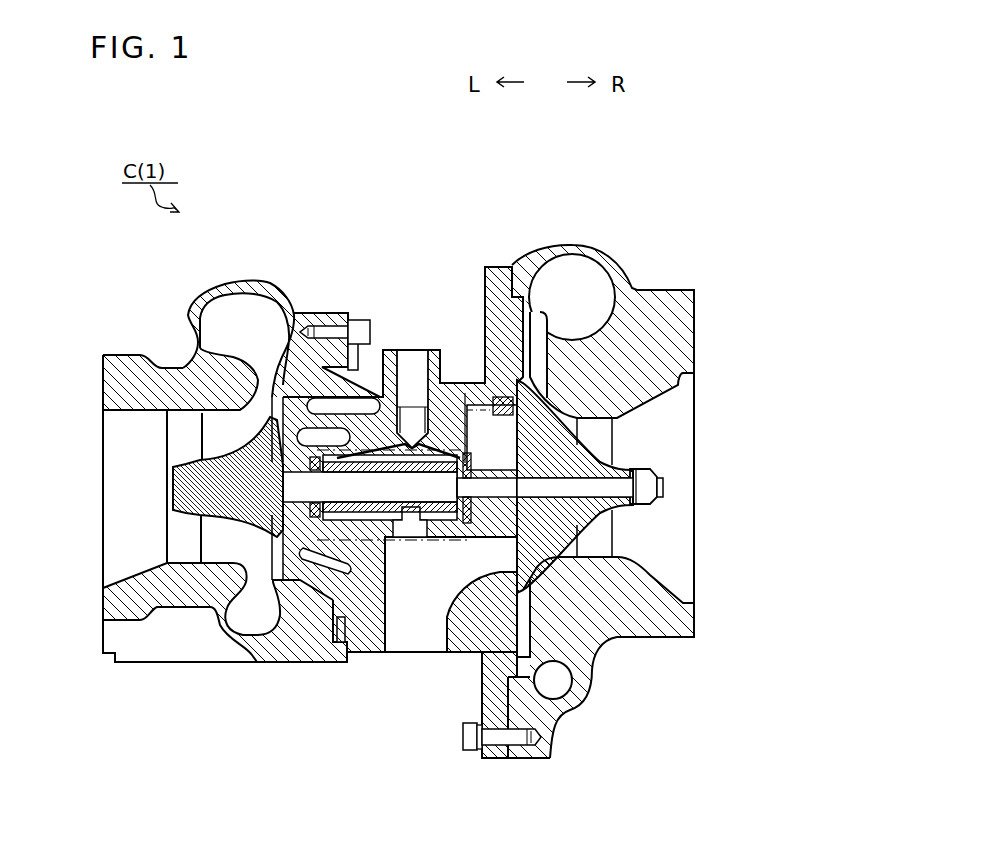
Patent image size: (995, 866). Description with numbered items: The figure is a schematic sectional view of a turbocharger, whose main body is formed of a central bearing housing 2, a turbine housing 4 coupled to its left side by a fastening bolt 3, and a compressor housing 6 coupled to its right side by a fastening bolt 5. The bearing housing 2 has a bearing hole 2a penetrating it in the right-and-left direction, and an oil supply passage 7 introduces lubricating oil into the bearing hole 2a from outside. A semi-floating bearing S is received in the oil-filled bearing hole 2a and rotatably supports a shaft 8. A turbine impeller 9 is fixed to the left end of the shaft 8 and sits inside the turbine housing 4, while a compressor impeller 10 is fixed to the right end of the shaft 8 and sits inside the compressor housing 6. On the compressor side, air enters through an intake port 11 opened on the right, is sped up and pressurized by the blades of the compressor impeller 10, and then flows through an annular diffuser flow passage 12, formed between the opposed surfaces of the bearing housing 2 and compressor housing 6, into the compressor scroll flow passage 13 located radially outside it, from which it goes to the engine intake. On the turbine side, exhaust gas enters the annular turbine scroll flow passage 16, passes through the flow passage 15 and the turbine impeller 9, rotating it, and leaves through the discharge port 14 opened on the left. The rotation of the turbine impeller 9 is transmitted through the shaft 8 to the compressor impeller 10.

The bearing housing 2 is at (503, 266).
The bearing hole 2a is at (388, 520).
The fastening bolt 3 is at (355, 319).
The turbine housing 4 is at (292, 298).
The fastening bolt 5 is at (470, 752).
The compressor housing 6 is at (668, 289).
The oil supply passage 7 is at (416, 360).
The shaft 8 is at (437, 500).
The turbine impeller 9 is at (232, 522).
The compressor impeller 10 is at (600, 458).
The intake port 11 is at (693, 383).
The diffuser flow passage 12 is at (530, 335).
The compressor scroll flow passage 13 is at (592, 272).
The discharge port 14 is at (160, 400).
The flow passage 15 is at (192, 346).
The turbine scroll flow passage 16 is at (232, 312).
The semi-floating bearing S is at (380, 450).